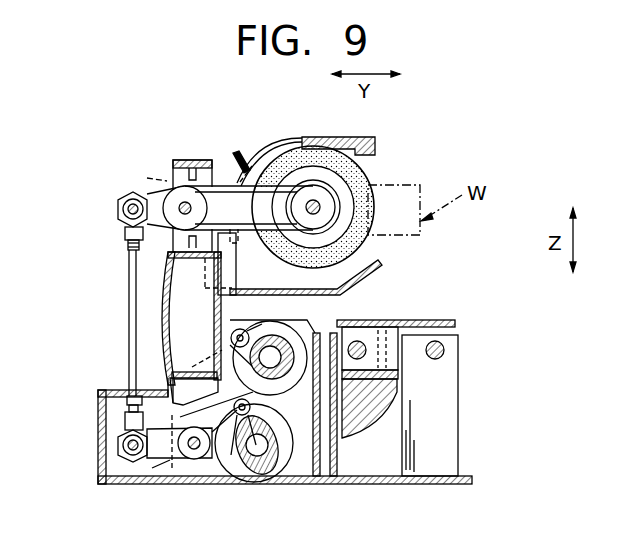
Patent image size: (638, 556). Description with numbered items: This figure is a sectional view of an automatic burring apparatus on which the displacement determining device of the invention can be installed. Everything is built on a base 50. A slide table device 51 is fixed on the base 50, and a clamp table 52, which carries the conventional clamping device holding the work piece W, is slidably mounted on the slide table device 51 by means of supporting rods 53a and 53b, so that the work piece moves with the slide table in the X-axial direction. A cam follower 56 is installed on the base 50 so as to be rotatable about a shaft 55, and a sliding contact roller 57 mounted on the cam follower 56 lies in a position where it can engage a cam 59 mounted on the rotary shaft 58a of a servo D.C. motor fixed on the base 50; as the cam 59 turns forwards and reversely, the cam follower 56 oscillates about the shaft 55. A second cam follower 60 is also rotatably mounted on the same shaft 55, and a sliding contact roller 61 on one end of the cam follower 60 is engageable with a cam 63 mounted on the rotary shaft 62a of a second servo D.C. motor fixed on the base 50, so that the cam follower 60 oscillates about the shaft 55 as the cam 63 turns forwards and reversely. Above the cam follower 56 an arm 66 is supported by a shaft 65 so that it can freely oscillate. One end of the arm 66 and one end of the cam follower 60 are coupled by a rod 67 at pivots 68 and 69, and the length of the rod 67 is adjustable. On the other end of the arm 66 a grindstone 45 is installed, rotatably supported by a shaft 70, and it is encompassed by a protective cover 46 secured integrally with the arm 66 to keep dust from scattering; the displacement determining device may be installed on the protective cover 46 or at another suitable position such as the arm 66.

The grindstone 45 is at (349, 144).
The protective cover 46 is at (309, 130).
The base 50 is at (323, 487).
The slide table device 51 is at (466, 392).
The clamp table 52 is at (425, 320).
The supporting rod 53a is at (448, 348).
The supporting rod 53b is at (366, 343).
The shaft 55 is at (195, 450).
The cam follower 56 is at (152, 309).
The sliding contact roller 57 is at (232, 336).
The rotary shaft 58a is at (250, 356).
The cam 59 is at (316, 395).
The cam follower 60 is at (160, 454).
The sliding contact roller 61 is at (242, 458).
The rotary shaft 62a is at (263, 468).
The cam 63 is at (287, 463).
The shaft 65 is at (182, 204).
The arm 66 is at (224, 172).
The rod 67 is at (121, 355).
The pivot 68 is at (124, 446).
The pivot 69 is at (124, 207).
The shaft 70 is at (319, 204).